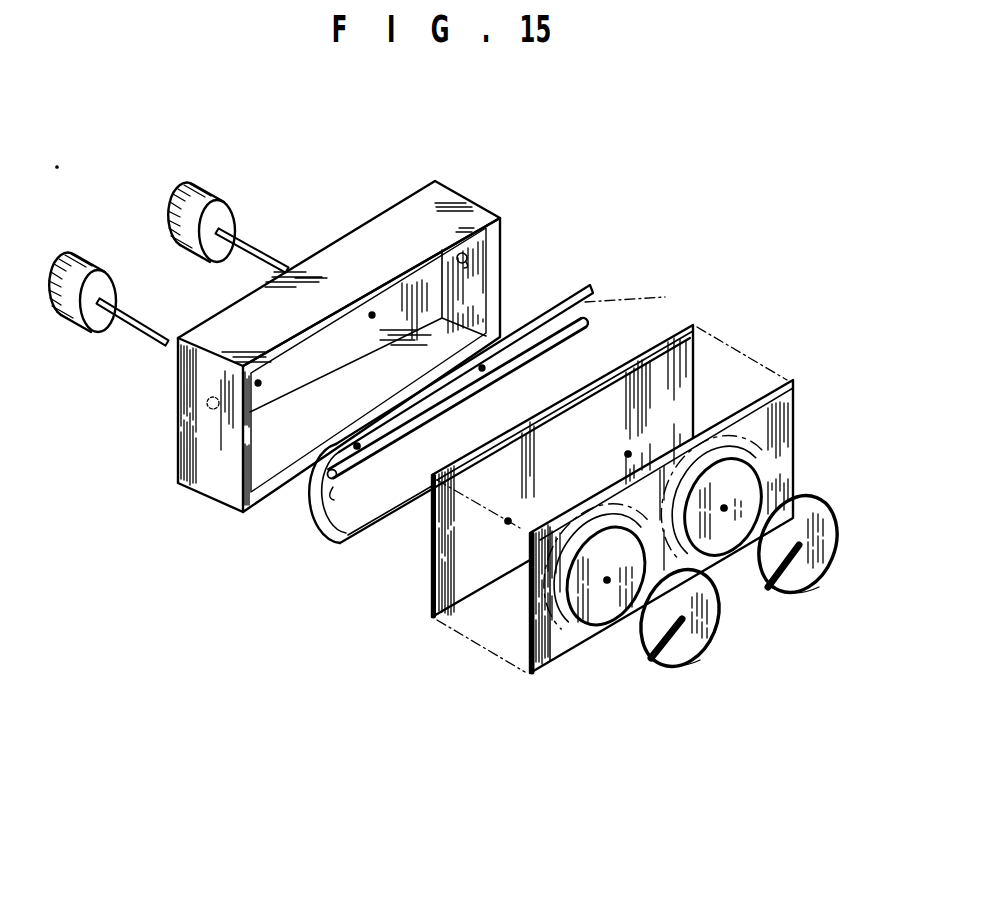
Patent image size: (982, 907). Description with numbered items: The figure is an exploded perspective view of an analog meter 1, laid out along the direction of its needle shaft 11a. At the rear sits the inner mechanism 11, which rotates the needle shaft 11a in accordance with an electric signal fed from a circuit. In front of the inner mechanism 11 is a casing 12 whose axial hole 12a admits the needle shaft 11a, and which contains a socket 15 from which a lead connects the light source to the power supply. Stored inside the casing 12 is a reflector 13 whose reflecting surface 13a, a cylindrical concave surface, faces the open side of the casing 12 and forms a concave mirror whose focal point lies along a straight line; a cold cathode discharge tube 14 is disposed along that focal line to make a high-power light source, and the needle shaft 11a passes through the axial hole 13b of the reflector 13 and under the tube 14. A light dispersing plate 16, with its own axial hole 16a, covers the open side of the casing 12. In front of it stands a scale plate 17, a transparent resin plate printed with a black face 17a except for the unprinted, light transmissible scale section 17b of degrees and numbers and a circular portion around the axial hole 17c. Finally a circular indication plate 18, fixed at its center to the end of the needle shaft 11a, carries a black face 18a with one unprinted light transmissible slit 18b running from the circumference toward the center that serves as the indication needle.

The analog meter 1 is at (735, 249).
The inner mechanism 11 is at (213, 193).
The needle shaft 11a is at (267, 250).
The casing 12 is at (452, 203).
The axial hole 12a is at (372, 315).
The reflector 13 is at (590, 287).
The reflecting surface 13a is at (333, 532).
The axial hole 13b is at (483, 367).
The cold cathode discharge tube 14 is at (357, 446).
The socket 15 is at (472, 264).
The light dispersing plate 16 is at (683, 340).
The axial hole 16a is at (628, 454).
The scale plate 17 is at (793, 380).
The black face 17a is at (773, 403).
The scale section 17b is at (785, 448).
The axial hole 17c is at (726, 508).
The indication plate 18 is at (653, 660).
The black face 18a is at (700, 632).
The light transmissible slit 18b is at (675, 662).